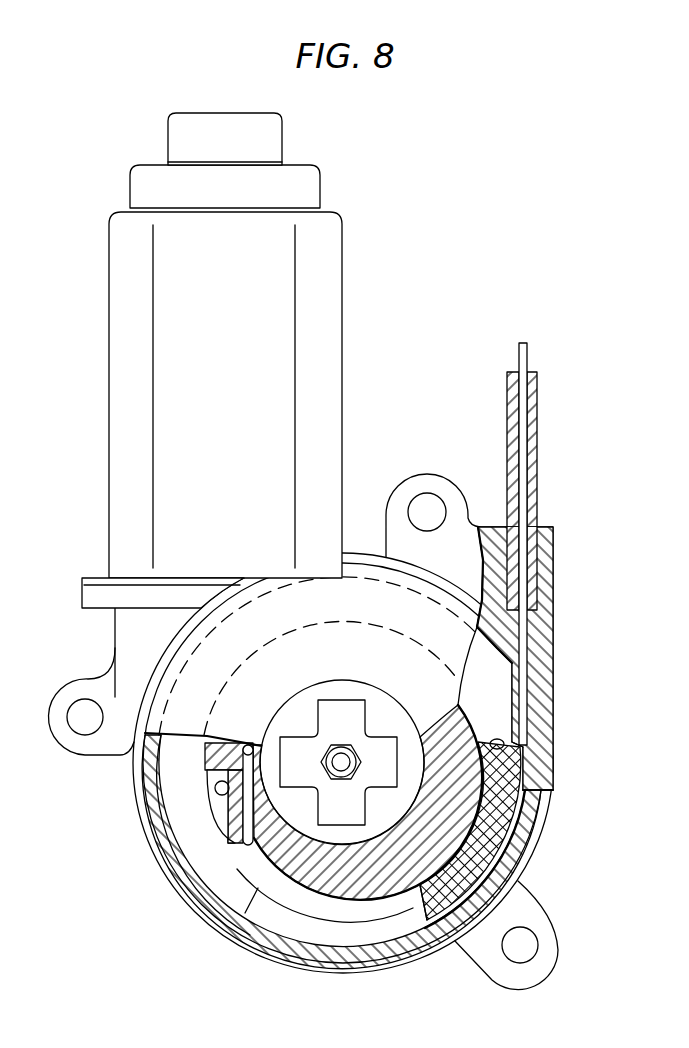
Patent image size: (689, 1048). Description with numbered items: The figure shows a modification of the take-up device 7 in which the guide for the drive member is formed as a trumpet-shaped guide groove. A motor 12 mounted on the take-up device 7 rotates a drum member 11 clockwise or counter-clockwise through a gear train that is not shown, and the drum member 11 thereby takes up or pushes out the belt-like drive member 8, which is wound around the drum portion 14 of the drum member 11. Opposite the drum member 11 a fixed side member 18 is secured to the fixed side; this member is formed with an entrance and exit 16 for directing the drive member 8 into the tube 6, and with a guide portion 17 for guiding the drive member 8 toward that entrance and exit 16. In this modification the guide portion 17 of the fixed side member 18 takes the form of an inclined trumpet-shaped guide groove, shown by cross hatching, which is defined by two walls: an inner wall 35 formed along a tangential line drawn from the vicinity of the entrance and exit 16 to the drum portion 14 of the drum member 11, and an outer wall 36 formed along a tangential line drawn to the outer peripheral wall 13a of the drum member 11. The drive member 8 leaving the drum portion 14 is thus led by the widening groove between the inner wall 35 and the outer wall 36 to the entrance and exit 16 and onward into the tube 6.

The tube 6 is at (538, 402).
The take-up device 7 is at (168, 880).
The drive member 8 is at (528, 352).
The drum member 11 is at (305, 885).
The motor 12 is at (283, 347).
The outer peripheral wall 13a is at (510, 850).
The drum portion 14 is at (342, 882).
The entrance and exit 16 is at (528, 678).
The guide portion 17 is at (495, 818).
The fixed side member 18 is at (185, 828).
The inner wall 35 is at (500, 742).
The outer wall 36 is at (525, 728).